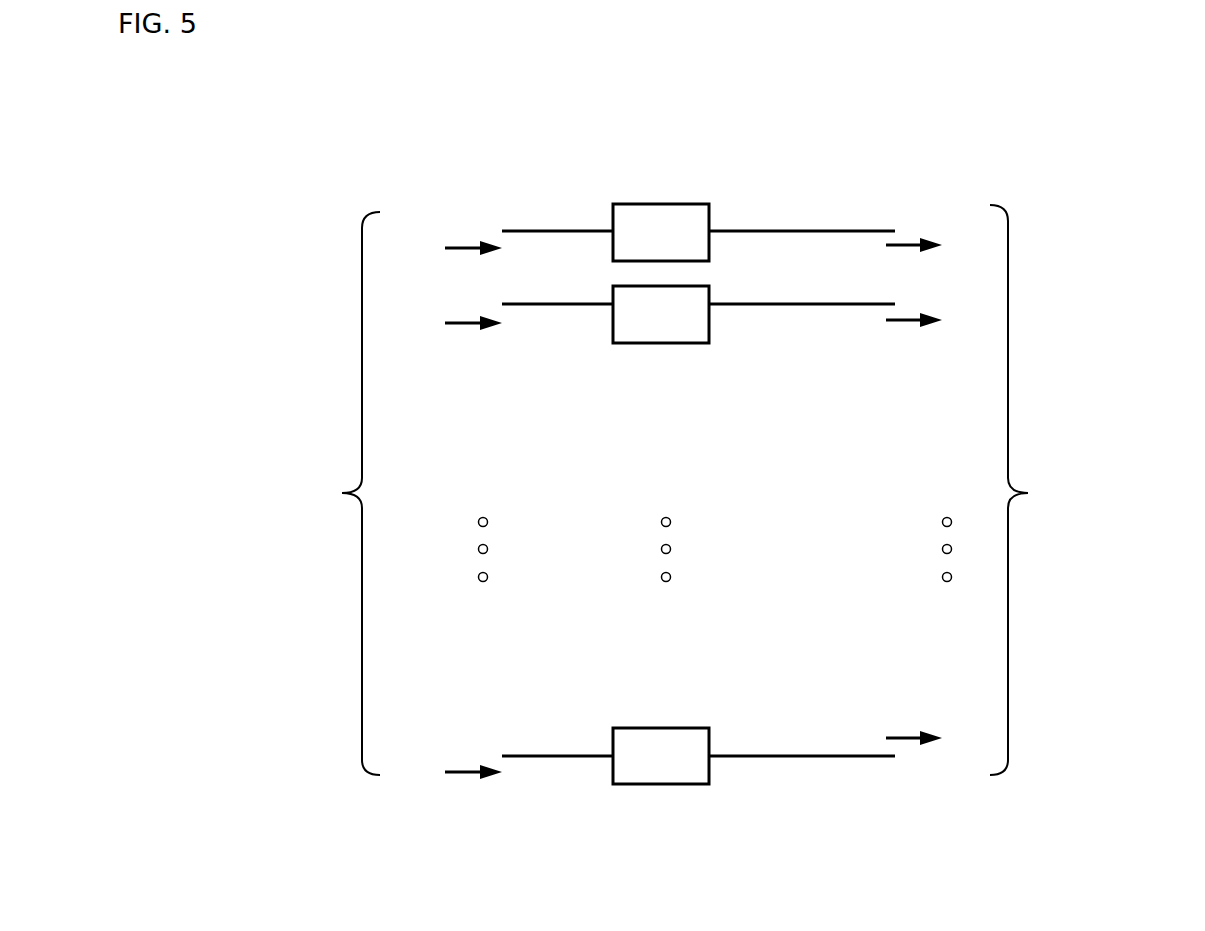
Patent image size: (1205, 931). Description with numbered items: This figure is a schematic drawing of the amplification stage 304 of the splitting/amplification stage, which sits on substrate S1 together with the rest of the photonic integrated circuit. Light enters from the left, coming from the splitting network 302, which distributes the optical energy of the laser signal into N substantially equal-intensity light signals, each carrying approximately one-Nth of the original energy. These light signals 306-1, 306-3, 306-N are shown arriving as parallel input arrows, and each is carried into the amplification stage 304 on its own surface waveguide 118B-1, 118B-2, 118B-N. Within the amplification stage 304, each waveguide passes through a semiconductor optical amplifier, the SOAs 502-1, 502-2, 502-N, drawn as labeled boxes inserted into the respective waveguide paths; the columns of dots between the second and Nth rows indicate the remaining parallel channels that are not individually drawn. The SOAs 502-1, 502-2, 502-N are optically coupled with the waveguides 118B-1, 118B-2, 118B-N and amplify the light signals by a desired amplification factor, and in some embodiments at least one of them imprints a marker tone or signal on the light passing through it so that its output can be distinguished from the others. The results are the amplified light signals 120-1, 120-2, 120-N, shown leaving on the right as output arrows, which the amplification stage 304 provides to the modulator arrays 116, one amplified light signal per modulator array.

The amplification stage 304 is at (442, 128).
The splitting network 302 is at (290, 493).
The modulator arrays 116 is at (1088, 490).
The light signal 306-1 is at (463, 247).
The light signal 306-3 is at (463, 324).
The light signal 306-N is at (463, 773).
The surface waveguide 118B-1 is at (577, 230).
The surface waveguide 118B-2 is at (578, 305).
The surface waveguide 118B-N is at (577, 757).
The SOA 502-1 is at (657, 204).
The SOA 502-2 is at (657, 343).
The SOA 502-N is at (657, 784).
The amplified light signal 120-1 is at (904, 244).
The amplified light signal 120-2 is at (904, 321).
The amplified light signal 120-N is at (905, 738).
The substrate S1 is at (867, 659).